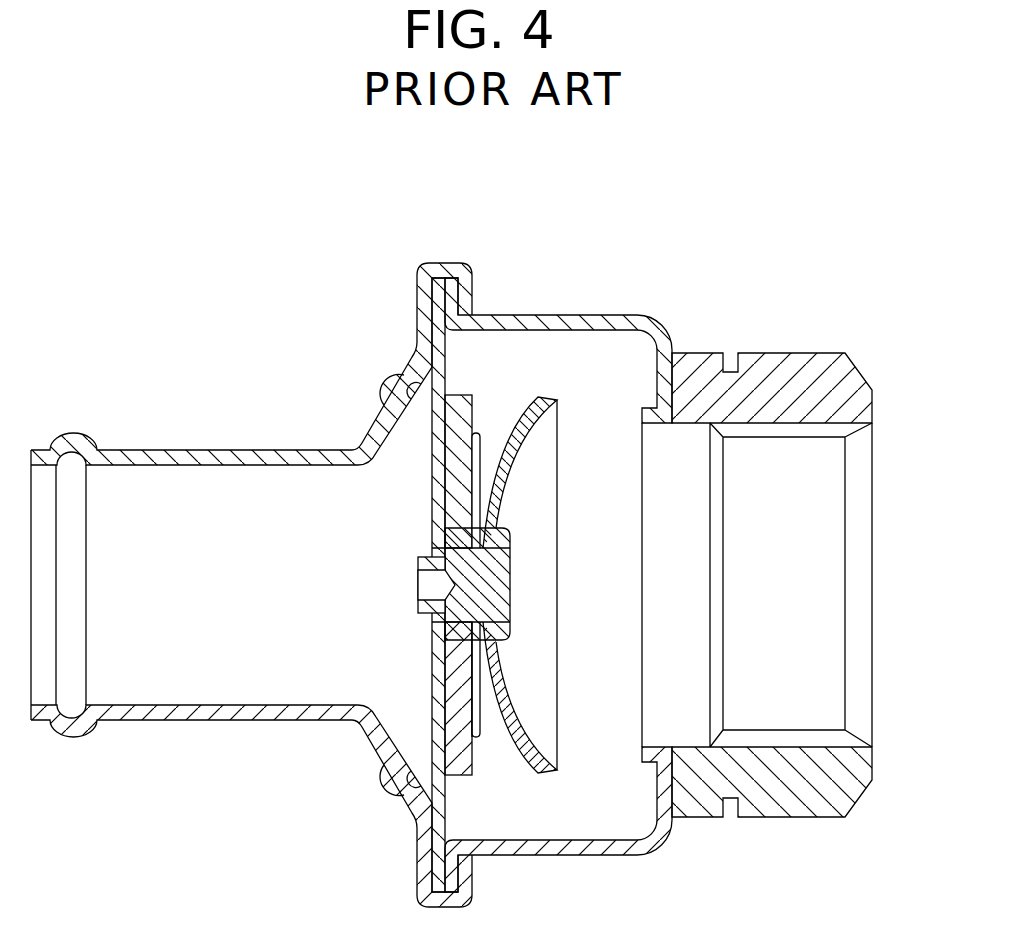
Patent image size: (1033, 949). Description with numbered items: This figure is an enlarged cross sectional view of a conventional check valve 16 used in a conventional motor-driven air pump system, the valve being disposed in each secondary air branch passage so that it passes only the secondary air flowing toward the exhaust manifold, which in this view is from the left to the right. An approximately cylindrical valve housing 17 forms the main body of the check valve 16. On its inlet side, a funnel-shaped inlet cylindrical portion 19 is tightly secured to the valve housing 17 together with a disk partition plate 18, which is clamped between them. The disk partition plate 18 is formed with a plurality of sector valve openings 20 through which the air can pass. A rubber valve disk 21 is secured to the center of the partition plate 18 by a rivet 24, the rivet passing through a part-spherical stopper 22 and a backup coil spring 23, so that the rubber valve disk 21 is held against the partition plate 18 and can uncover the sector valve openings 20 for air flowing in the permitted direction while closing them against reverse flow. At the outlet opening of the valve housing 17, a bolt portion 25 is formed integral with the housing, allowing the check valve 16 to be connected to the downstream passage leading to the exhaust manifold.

The check valve 16 is at (345, 378).
The valve housing 17 is at (581, 323).
The disk partition plate 18 is at (440, 787).
The funnel-shaped inlet cylindrical portion 19 is at (187, 448).
The sector valve openings 20 is at (437, 477).
The rubber valve disk 21 is at (463, 410).
The part-spherical stopper 22 is at (530, 767).
The backup coil spring 23 is at (477, 737).
The rivet 24 is at (507, 587).
The bolt portion 25 is at (793, 373).